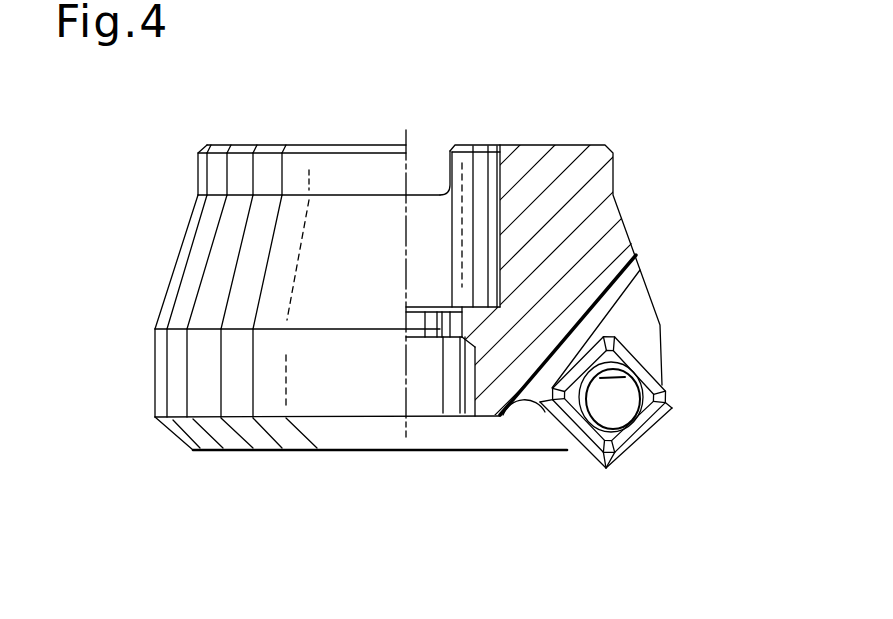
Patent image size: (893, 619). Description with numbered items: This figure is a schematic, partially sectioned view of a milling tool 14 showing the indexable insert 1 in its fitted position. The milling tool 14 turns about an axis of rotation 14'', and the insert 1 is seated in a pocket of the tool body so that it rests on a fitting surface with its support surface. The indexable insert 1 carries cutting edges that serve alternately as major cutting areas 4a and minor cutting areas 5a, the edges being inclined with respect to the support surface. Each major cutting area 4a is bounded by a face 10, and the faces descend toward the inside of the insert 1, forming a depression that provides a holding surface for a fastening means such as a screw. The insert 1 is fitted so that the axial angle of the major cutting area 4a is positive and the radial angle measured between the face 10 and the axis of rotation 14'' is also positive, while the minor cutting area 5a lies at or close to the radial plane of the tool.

The indexable insert 1 is at (672, 369).
The milling tool 14 is at (562, 302).
The axis of rotation 14'' is at (378, 118).
The major cutting area 4a is at (667, 420).
The face 10 is at (632, 437).
The minor cutting area 5a is at (607, 466).